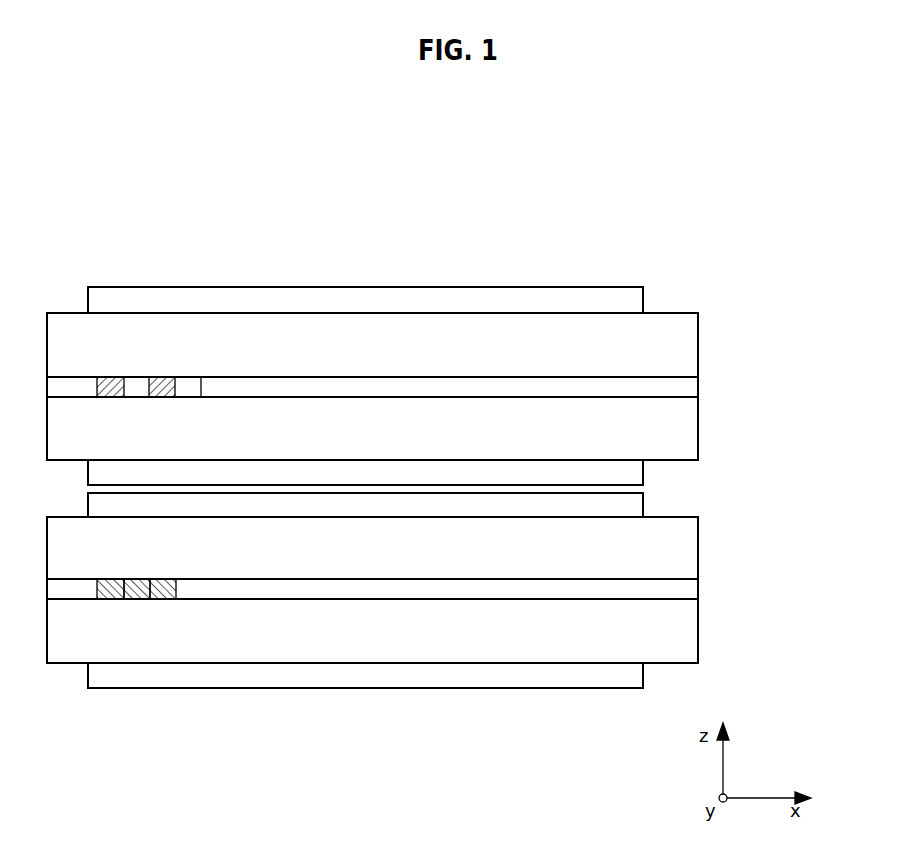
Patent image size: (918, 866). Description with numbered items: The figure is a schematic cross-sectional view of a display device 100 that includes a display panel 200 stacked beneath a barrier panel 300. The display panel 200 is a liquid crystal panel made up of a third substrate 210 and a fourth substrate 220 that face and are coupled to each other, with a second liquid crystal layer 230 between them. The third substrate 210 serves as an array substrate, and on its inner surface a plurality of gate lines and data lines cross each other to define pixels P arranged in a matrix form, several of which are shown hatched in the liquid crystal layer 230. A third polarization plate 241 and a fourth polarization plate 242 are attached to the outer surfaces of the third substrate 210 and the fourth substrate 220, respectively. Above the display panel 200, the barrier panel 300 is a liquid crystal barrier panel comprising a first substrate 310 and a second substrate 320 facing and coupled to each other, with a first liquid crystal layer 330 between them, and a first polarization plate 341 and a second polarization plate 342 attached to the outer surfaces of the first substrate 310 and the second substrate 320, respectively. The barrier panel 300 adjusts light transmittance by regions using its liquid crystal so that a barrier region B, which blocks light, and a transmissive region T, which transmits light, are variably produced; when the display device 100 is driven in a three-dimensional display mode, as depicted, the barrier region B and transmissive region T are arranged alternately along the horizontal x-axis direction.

The display device 100 is at (395, 170).
The barrier panel 300 is at (448, 386).
The second polarization plate 342 is at (644, 300).
The second substrate 320 is at (690, 343).
The liquid crystal layer 330 is at (665, 388).
The first substrate 310 is at (667, 438).
The first polarization plate 341 is at (644, 467).
The barrier region B is at (108, 398).
The transmissive region T is at (142, 398).
The display panel 200 is at (448, 593).
The fourth polarization plate 242 is at (644, 503).
The fourth substrate 220 is at (690, 548).
The liquid crystal layer 230 is at (665, 591).
The pixels P is at (120, 600).
The third substrate 210 is at (667, 643).
The third polarization plate 241 is at (644, 679).